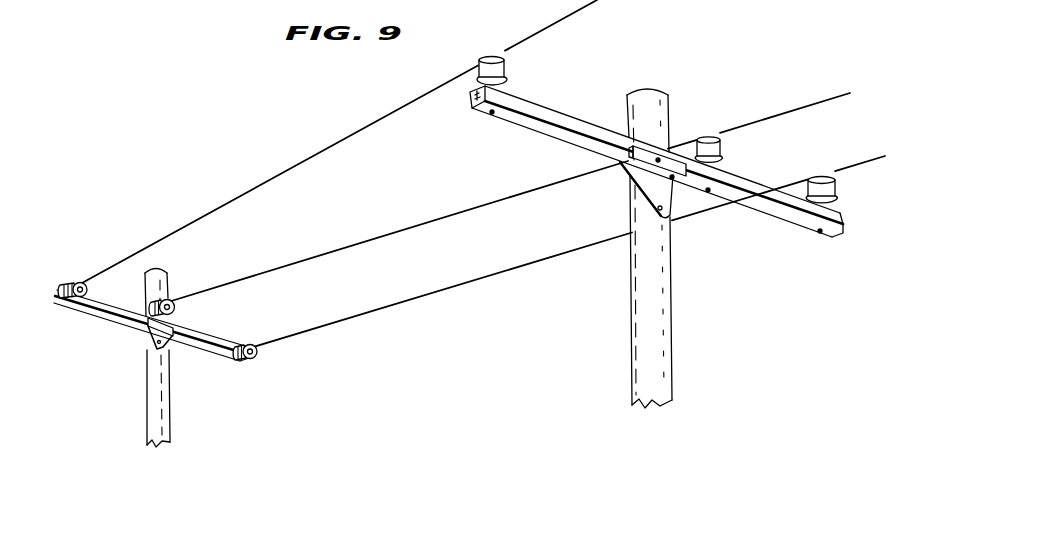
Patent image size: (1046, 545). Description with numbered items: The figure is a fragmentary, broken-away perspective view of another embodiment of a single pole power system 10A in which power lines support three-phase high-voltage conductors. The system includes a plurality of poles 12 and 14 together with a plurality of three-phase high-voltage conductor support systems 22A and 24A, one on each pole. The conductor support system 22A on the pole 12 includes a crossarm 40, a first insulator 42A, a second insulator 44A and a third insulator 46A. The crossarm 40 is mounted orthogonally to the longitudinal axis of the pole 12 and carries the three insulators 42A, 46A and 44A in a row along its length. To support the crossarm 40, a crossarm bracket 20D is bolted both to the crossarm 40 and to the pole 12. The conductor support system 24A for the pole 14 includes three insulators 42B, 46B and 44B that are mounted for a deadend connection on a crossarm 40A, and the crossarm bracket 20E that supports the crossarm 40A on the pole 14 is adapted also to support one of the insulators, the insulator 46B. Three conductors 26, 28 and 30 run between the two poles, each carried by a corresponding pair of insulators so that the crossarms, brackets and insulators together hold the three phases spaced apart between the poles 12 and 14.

The single pole power system 10A is at (701, 24).
The pole 12 is at (640, 350).
The pole 14 is at (153, 404).
The crossarm bracket 20D is at (618, 187).
The crossarm bracket 20E is at (186, 318).
The three-phase high-voltage conductor support system 22A is at (683, 131).
The three-phase high-voltage conductor support system 24A is at (183, 283).
The conductor wire 26 is at (279, 178).
The conductor wire 28 is at (382, 238).
The conductor wire 30 is at (457, 284).
The crossarm 40 is at (556, 119).
The crossarm 40A is at (127, 318).
The first insulator 42A is at (505, 68).
The insulator 42B is at (82, 280).
The second insulator 44A is at (836, 188).
The insulator 44B is at (256, 344).
The third insulator 46A is at (722, 148).
The insulator 46B is at (160, 300).